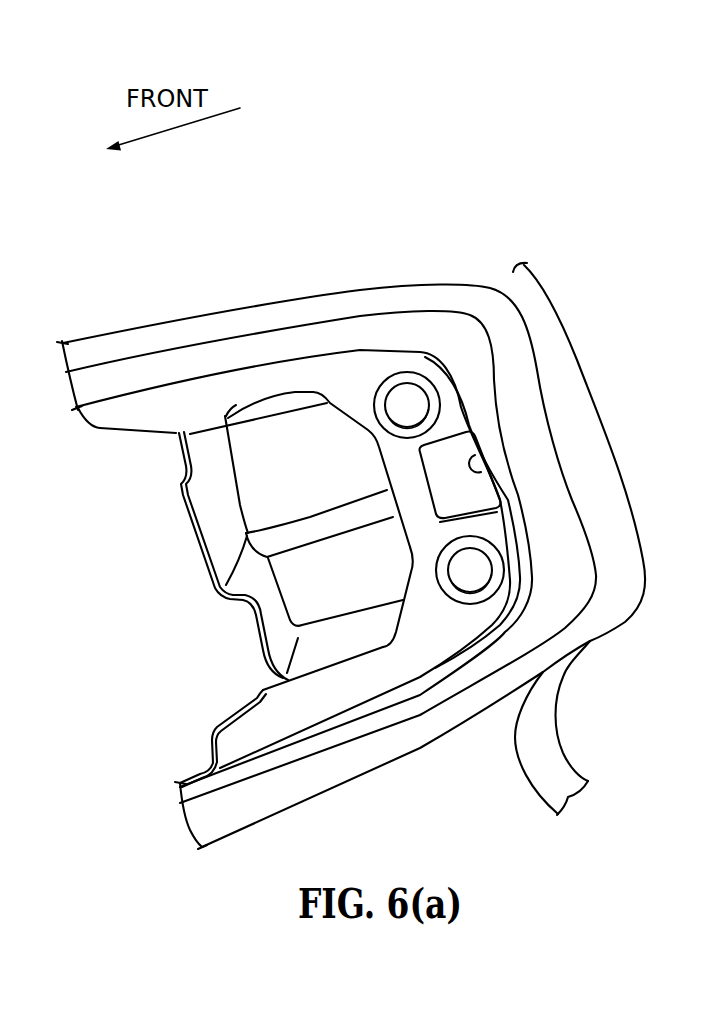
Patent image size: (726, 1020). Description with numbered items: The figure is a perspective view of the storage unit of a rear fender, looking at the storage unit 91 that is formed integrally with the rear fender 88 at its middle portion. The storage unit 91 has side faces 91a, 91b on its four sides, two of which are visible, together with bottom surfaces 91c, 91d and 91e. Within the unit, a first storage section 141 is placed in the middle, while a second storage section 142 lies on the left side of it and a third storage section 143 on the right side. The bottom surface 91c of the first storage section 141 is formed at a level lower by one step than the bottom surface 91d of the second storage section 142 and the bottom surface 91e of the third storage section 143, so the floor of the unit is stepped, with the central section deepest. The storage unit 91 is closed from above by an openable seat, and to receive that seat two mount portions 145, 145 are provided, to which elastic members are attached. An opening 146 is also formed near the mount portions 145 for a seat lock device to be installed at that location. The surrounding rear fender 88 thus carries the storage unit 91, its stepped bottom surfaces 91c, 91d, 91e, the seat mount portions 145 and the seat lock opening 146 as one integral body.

The rear fender 88 is at (551, 291).
The storage unit 91 is at (172, 518).
The side face 91a is at (236, 554).
The side face 91b is at (343, 642).
The bottom surface 91c is at (250, 472).
The bottom surface 91d is at (322, 595).
The bottom surface 91e is at (267, 411).
The first storage section 141 is at (222, 527).
The second storage section 142 is at (266, 598).
The third storage section 143 is at (224, 406).
The mount portion 145 is at (387, 398).
The opening 146 is at (487, 448).